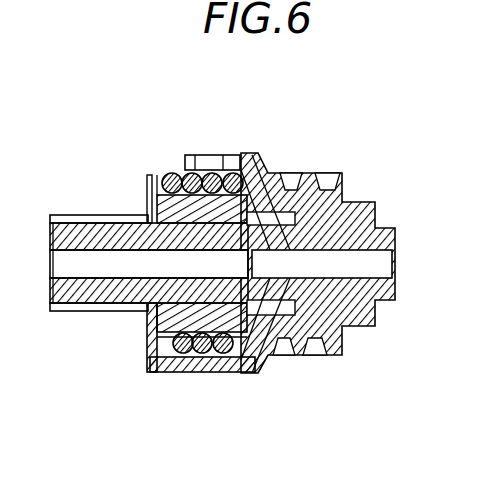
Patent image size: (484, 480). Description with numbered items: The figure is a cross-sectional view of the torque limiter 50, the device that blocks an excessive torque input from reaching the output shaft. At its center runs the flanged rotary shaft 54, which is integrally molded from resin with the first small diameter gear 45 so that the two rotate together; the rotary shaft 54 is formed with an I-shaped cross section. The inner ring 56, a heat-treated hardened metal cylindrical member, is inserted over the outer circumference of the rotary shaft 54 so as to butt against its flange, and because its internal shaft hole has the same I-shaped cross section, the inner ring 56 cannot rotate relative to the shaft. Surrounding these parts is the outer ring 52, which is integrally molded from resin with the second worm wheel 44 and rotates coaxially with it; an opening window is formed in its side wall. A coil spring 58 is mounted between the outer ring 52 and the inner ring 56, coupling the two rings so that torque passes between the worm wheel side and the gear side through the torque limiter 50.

The second worm wheel 44 is at (312, 352).
The first small diameter gear 45 is at (102, 313).
The torque limiter 50 is at (352, 97).
The outer ring 52 is at (210, 375).
The rotary shaft 54 is at (222, 165).
The inner ring 56 is at (170, 373).
The coil spring 58 is at (167, 172).